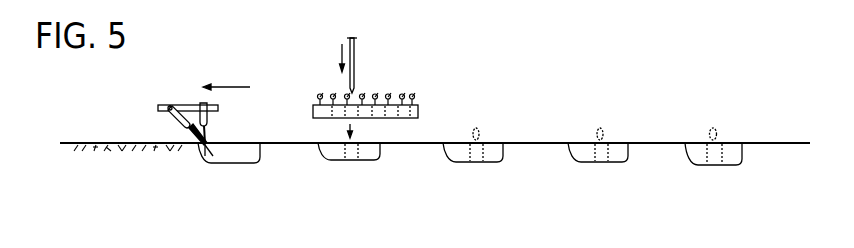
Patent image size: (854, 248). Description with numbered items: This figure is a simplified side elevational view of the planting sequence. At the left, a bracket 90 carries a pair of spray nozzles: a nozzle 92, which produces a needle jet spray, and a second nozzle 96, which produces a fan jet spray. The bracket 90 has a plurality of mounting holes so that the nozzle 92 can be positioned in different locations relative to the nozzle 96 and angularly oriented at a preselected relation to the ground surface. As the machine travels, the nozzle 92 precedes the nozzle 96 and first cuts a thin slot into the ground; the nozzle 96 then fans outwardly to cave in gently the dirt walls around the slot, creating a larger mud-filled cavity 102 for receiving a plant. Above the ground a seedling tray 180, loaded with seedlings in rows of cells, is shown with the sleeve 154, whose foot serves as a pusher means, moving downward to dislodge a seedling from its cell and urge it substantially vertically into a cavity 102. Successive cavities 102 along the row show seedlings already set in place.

The bracket 90 is at (189, 104).
The nozzle 92 is at (168, 120).
The second nozzle 96 is at (221, 116).
The sleeve 154 is at (354, 55).
The seedling tray 180 is at (427, 103).
The cavity 102 is at (456, 161).